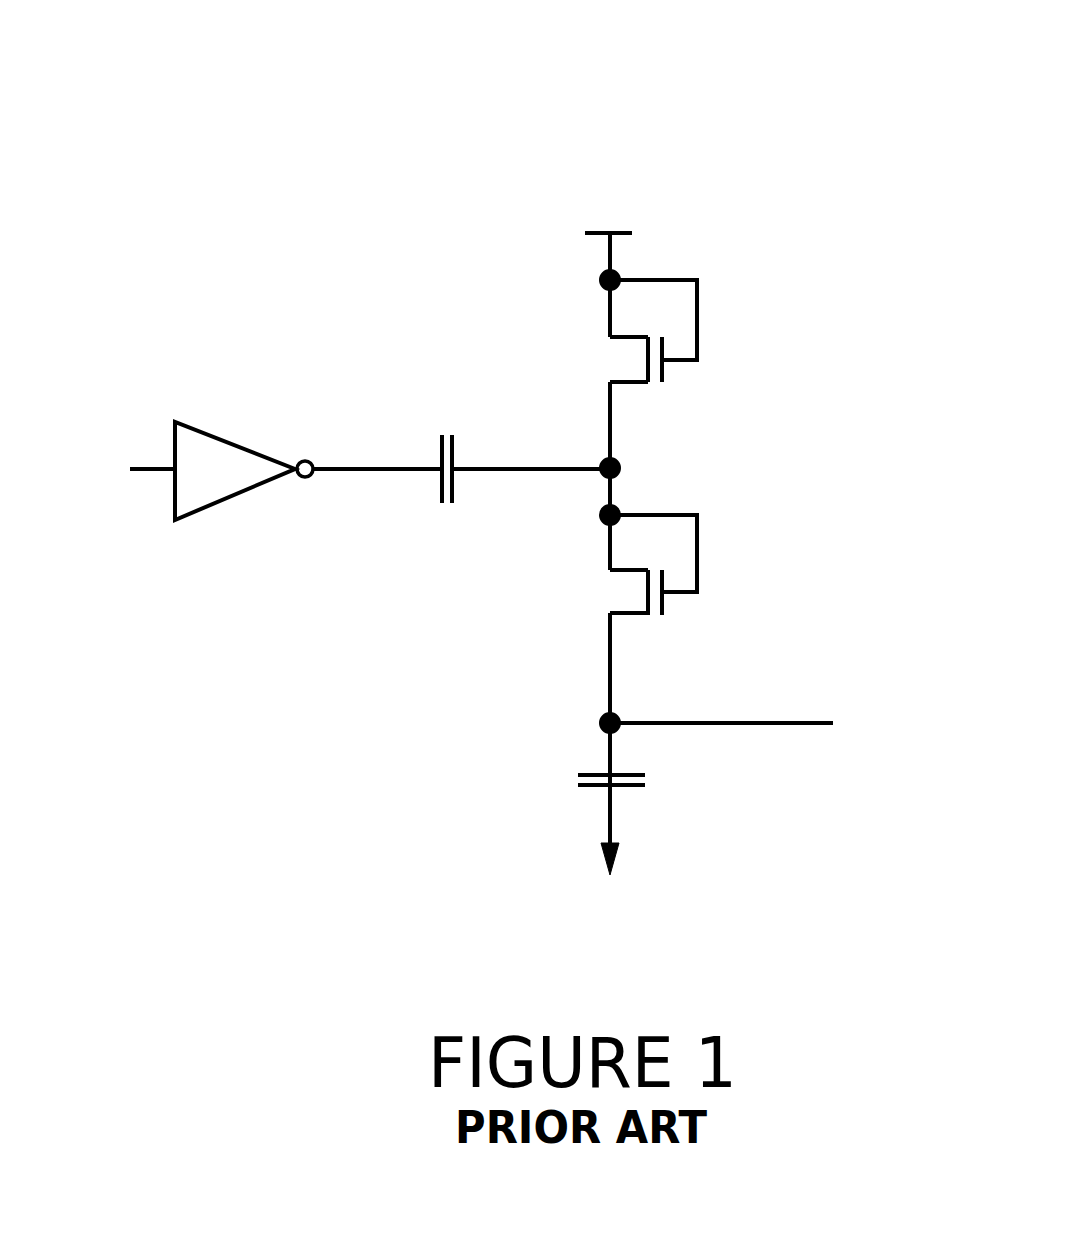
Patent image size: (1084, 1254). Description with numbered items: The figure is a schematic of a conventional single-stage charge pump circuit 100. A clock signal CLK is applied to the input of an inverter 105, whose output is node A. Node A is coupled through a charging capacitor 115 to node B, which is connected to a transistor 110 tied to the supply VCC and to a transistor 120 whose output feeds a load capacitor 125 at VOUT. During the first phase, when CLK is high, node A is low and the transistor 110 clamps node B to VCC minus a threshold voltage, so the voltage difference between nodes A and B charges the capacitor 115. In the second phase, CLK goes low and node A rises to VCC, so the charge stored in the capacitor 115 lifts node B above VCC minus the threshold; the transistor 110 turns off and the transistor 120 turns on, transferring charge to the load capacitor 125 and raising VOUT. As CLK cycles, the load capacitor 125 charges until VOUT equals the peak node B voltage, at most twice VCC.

The charge pump circuit 100 is at (776, 108).
The inverter 105 is at (216, 434).
The transistor 110 is at (674, 398).
The capacitor 115 is at (441, 439).
The transistor 120 is at (674, 632).
The load capacitor 125 is at (627, 786).